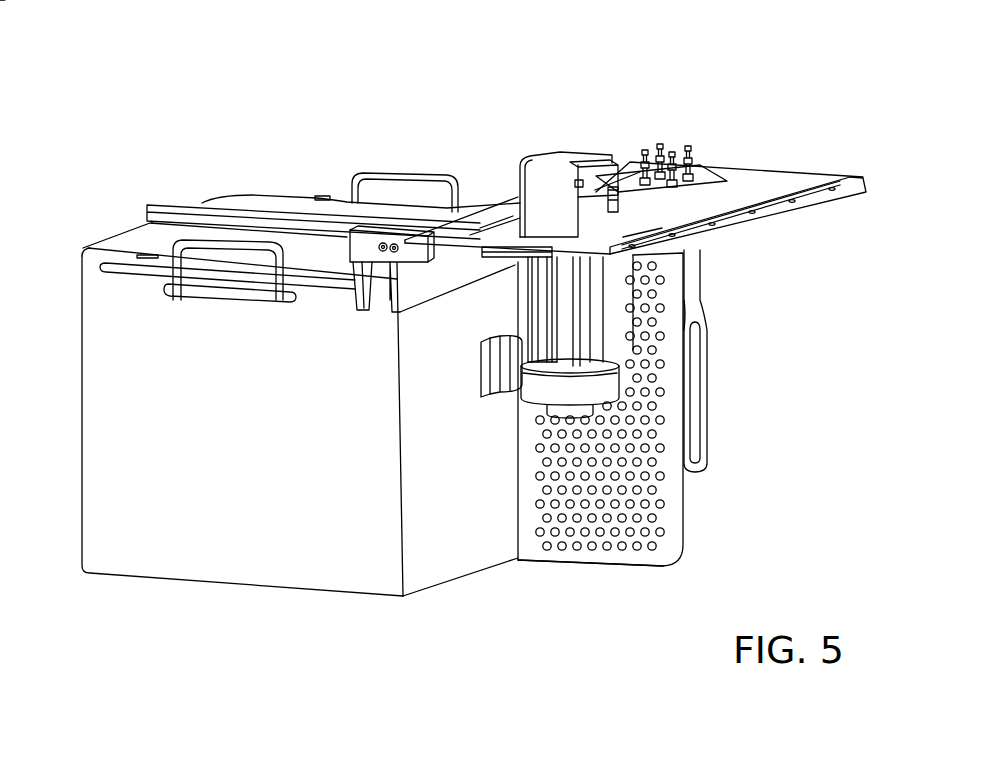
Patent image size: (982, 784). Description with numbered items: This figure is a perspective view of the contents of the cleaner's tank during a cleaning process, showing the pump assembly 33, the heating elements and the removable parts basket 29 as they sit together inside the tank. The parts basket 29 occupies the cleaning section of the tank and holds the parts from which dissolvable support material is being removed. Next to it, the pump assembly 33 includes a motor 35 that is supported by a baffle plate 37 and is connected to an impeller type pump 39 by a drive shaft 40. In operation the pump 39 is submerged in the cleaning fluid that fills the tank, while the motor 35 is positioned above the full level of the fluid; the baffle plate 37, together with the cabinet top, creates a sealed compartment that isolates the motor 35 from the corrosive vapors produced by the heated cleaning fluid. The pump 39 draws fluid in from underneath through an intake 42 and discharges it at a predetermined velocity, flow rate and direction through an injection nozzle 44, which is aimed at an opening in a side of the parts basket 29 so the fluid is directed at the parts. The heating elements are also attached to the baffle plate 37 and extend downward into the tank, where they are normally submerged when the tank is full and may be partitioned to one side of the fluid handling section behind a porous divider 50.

The parts basket 29 is at (277, 555).
The pump assembly 33 is at (486, 172).
The motor 35 is at (558, 150).
The baffle plate 37 is at (770, 170).
The impeller type pump 39 is at (607, 387).
The drive shaft 40 is at (575, 303).
The intake 42 is at (557, 413).
The injection nozzle 44 is at (497, 373).
The porous divider 50 is at (653, 567).